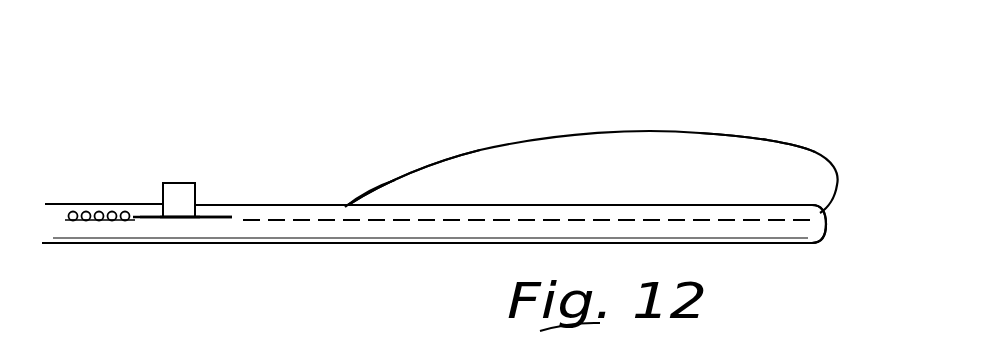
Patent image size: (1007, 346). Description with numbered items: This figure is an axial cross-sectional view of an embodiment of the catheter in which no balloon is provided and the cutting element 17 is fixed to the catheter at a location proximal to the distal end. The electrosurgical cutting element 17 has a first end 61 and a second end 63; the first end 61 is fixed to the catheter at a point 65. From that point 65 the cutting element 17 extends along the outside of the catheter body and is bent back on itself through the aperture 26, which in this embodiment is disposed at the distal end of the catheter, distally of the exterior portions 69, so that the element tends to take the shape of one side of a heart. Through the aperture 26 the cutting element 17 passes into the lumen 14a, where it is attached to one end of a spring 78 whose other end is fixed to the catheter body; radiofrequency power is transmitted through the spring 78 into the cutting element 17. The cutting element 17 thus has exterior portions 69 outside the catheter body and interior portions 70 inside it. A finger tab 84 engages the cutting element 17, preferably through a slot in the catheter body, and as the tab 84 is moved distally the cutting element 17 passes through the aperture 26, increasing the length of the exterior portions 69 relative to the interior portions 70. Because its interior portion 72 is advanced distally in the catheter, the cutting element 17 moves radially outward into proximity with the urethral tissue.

The lumen 14a is at (750, 232).
The electrosurgical cutting element 17 is at (823, 150).
The aperture 26 is at (825, 217).
The first end 61 is at (369, 170).
The second end 63 is at (153, 226).
The point 65 is at (346, 205).
The exterior portions 69 is at (778, 134).
The interior portions 70 is at (410, 223).
The interior portion 72 is at (493, 228).
The spring 78 is at (103, 223).
The finger tab 84 is at (187, 195).